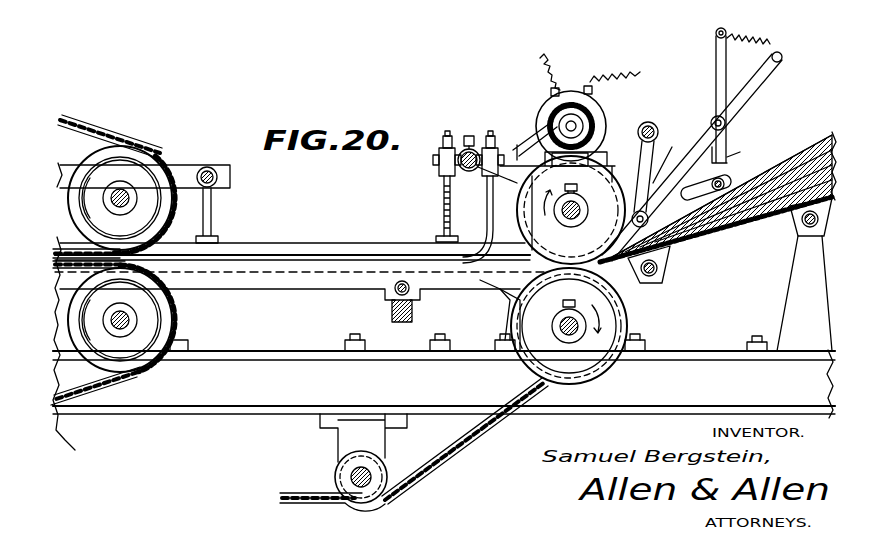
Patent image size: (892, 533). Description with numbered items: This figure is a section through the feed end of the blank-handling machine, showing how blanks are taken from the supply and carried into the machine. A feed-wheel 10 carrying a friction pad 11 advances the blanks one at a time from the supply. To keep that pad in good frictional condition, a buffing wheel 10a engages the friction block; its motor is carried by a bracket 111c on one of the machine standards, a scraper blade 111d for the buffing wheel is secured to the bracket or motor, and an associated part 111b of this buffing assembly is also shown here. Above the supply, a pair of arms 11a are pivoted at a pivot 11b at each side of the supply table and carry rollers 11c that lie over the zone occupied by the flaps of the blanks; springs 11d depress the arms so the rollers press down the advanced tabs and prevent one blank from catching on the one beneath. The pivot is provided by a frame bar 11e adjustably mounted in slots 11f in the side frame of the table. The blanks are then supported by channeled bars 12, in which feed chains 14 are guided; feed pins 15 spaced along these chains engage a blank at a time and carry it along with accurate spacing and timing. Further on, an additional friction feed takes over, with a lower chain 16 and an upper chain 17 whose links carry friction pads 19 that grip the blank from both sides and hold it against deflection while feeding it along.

The feed-wheel 10 is at (571, 210).
The buffing wheel 10a is at (557, 123).
The friction pad 11 is at (624, 121).
The arms 11a is at (752, 97).
The pivot 11b is at (728, 123).
The rollers 11c is at (658, 182).
The springs 11d is at (738, 40).
The frame bar 11e is at (716, 48).
The slots 11f is at (738, 158).
The channeled bars 12 is at (285, 280).
The feed chains 14 is at (448, 452).
The feed pins 15 is at (310, 512).
The chain 16 is at (113, 356).
The chain 17 is at (86, 128).
The friction pads 19 is at (128, 140).
The tension springs 111b is at (579, 90).
The bracket 111c is at (441, 133).
The scraper blade 111d is at (515, 127).